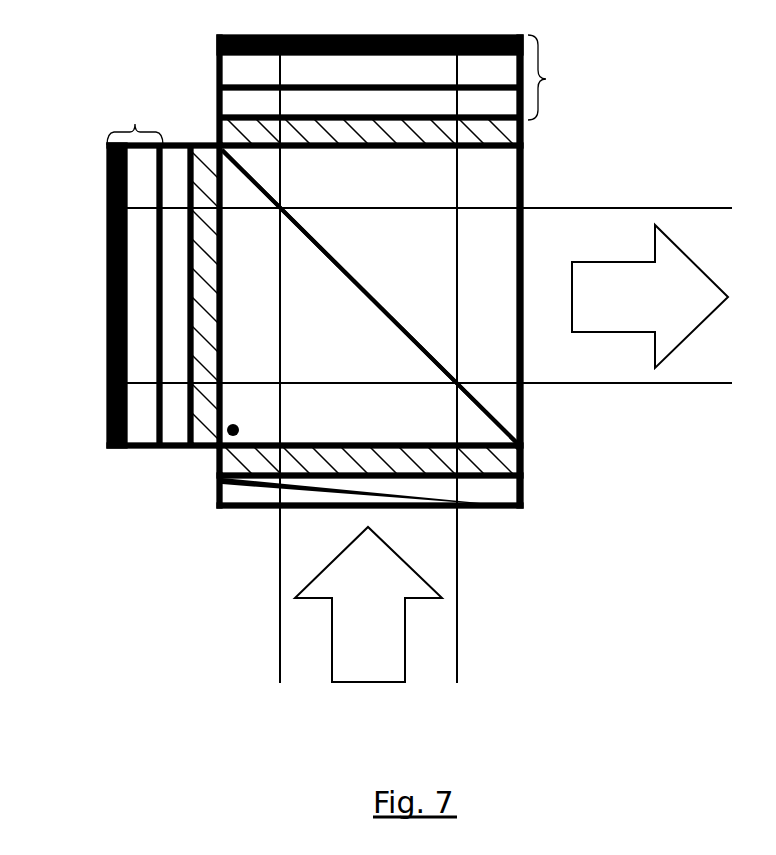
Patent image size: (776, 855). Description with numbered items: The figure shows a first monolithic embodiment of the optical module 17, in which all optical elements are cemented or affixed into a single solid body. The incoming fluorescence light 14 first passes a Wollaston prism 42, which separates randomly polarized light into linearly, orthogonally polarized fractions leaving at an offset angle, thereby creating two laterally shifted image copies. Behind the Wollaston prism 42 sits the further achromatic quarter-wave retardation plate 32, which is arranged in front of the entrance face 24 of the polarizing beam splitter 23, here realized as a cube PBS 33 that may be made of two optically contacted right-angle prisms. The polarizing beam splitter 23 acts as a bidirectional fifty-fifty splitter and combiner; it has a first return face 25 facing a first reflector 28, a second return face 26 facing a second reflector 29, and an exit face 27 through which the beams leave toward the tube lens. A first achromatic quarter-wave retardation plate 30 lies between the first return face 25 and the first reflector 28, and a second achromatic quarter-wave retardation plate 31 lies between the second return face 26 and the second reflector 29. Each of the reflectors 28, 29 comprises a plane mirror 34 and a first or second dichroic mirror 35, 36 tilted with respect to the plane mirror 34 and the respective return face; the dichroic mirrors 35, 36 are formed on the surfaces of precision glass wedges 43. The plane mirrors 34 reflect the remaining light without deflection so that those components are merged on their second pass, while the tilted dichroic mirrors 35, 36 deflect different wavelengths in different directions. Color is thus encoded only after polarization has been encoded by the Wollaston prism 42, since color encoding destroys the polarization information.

The fluorescence light 14 is at (279, 605).
The optical module 17 is at (667, 97).
The polarizing beam splitter 23 is at (524, 423).
The entrance face 24 is at (504, 452).
The first return face 25 is at (213, 431).
The second return face 26 is at (503, 138).
The exit face 27 is at (525, 181).
The first reflector 28 is at (135, 121).
The second reflector 29 is at (402, 77).
The first achromatic quarter-wave retardation plate 30 is at (192, 145).
The second achromatic quarter-wave retardation plate 31 is at (218, 145).
The further achromatic quarter-wave retardation plate 32 is at (212, 469).
The cube PBS 33 is at (524, 423).
The plane mirror 34 is at (214, 43).
The first dichroic mirror 35 is at (152, 453).
The second dichroic mirror 36 is at (525, 126).
The Wollaston prism 42 is at (232, 514).
The precision glass wedges 43 is at (230, 72).